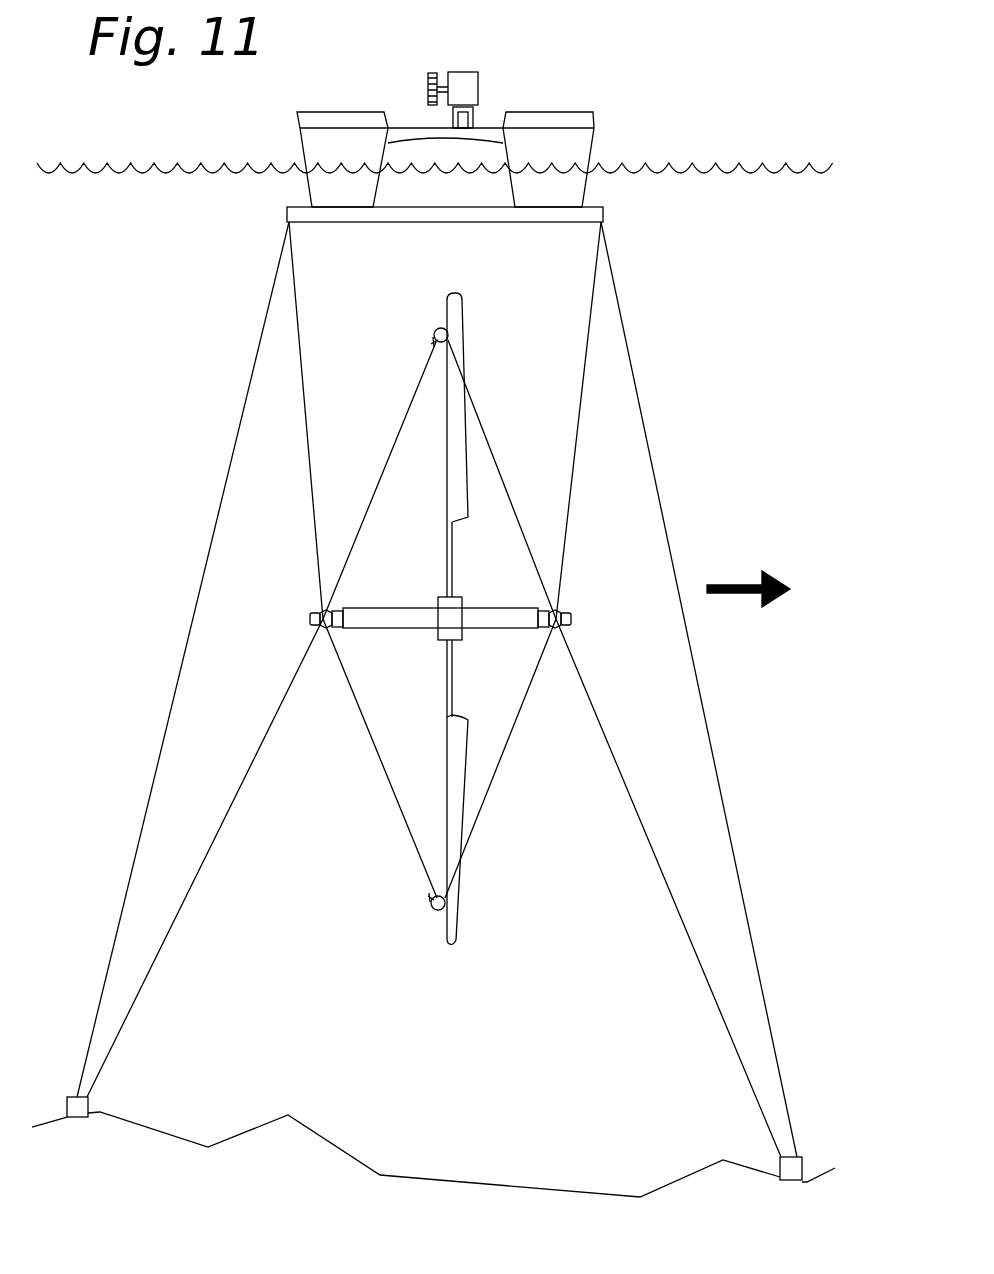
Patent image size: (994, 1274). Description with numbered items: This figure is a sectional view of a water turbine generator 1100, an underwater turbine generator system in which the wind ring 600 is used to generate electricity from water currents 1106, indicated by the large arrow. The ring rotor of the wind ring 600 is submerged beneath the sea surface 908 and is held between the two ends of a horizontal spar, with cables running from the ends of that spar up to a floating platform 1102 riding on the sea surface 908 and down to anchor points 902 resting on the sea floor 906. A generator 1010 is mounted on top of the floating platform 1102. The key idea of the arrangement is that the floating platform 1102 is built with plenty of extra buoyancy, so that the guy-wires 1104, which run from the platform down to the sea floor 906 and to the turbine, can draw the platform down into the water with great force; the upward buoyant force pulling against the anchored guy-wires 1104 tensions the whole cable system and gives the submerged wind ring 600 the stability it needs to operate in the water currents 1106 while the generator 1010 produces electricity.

The water turbine generator 1100 is at (712, 438).
The generator 1010 is at (467, 74).
The sea surface 908 is at (128, 177).
The floating platform 1102 is at (387, 215).
The guy-wire 1104 is at (311, 500).
The wind ring 600 is at (532, 879).
The anchors 902 is at (90, 1100).
The sea floor 906 is at (258, 1125).
The water currents 1106 is at (772, 604).